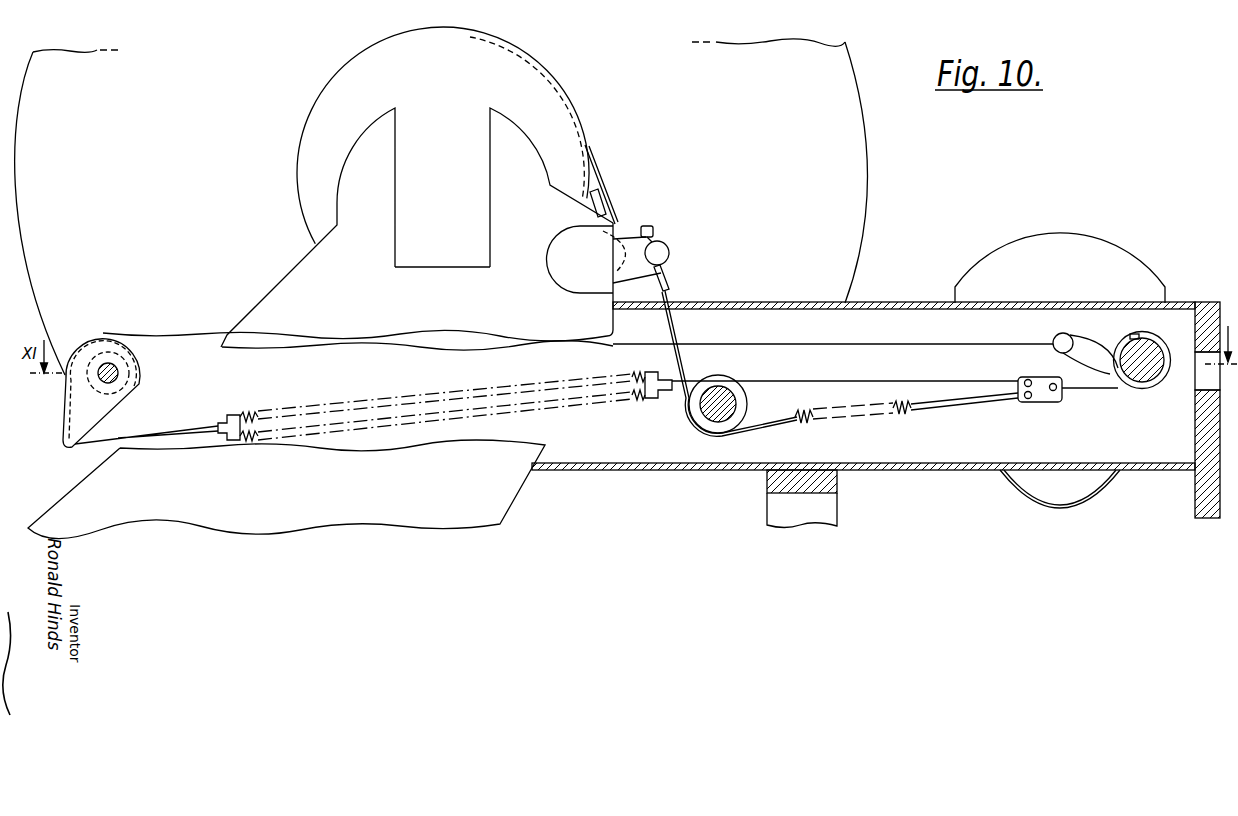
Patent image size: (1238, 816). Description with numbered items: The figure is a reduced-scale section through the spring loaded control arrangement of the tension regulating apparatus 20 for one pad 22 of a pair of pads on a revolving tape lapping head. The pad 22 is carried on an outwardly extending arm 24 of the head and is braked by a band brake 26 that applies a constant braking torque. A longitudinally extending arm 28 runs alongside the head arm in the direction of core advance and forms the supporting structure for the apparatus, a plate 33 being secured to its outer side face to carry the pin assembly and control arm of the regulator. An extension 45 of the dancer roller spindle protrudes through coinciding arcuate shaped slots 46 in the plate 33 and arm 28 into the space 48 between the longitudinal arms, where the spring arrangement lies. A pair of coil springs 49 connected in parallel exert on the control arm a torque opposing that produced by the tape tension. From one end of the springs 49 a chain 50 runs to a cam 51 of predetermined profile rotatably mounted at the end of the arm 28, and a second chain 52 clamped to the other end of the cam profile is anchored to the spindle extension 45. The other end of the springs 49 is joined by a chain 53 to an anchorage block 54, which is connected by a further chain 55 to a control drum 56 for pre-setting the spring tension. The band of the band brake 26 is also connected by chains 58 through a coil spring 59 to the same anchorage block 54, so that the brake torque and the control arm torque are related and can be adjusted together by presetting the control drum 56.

The tension regulating apparatus 20 is at (954, 276).
The pad 22 is at (852, 147).
The outwardly extending arm 24 is at (268, 298).
The band brake 26 is at (602, 148).
The longitudinally extending arm 28 is at (735, 469).
The plate 33 is at (1137, 270).
The extension of the fixed spindle 45 is at (1056, 336).
The arcuate shaped slots 46 is at (1100, 348).
The space 48 is at (992, 448).
The pair of coil springs 49 is at (270, 412).
The chain 50 is at (190, 428).
The cam 51 is at (118, 408).
The second chain 52 is at (800, 346).
The chain 53 is at (903, 381).
The anchorage block 54 is at (1045, 397).
The further chain 55 is at (1108, 388).
The control drum 56 is at (1155, 372).
The chains 58 is at (683, 328).
The coil spring 59 is at (868, 420).